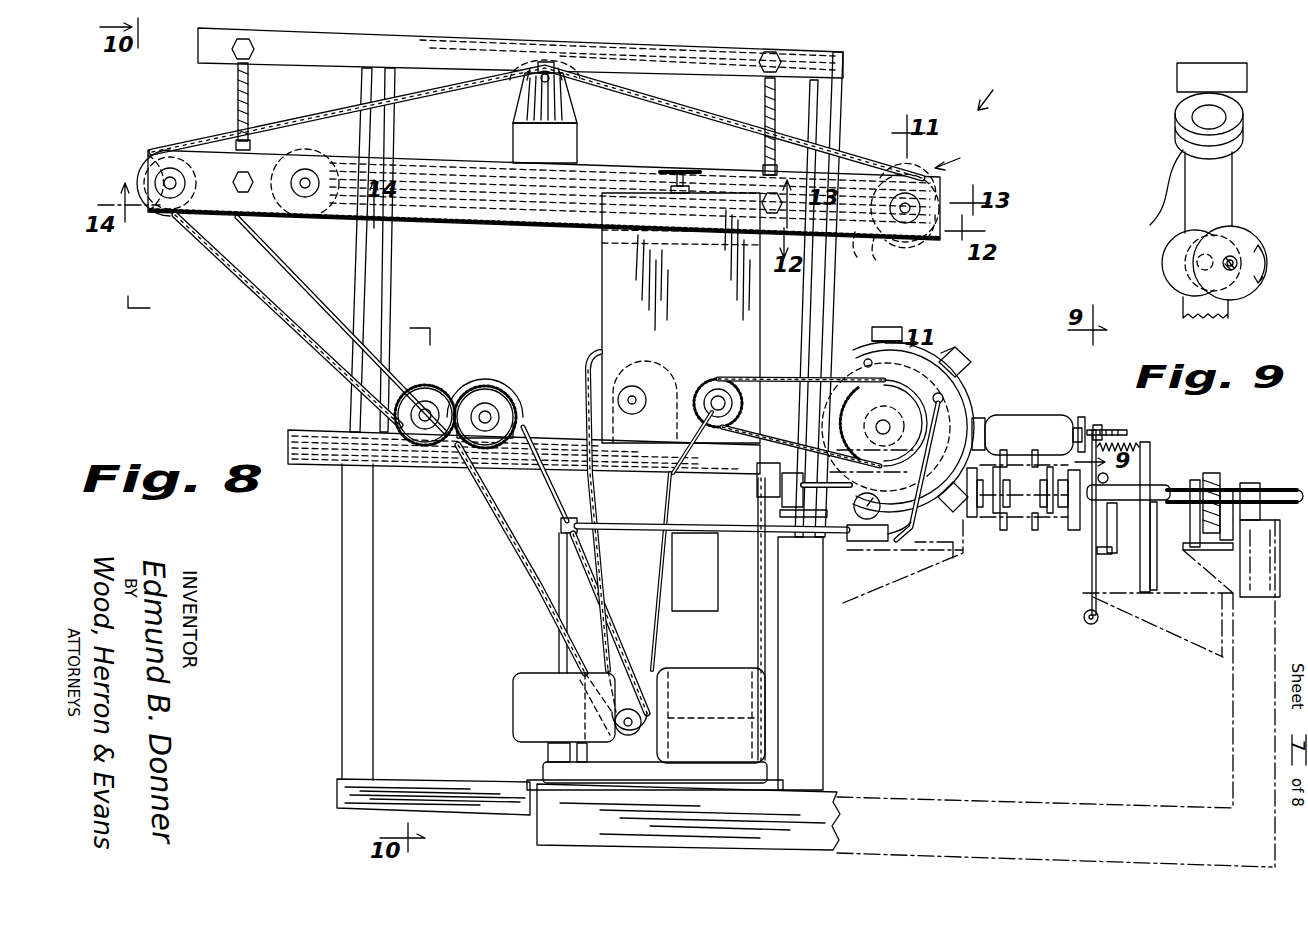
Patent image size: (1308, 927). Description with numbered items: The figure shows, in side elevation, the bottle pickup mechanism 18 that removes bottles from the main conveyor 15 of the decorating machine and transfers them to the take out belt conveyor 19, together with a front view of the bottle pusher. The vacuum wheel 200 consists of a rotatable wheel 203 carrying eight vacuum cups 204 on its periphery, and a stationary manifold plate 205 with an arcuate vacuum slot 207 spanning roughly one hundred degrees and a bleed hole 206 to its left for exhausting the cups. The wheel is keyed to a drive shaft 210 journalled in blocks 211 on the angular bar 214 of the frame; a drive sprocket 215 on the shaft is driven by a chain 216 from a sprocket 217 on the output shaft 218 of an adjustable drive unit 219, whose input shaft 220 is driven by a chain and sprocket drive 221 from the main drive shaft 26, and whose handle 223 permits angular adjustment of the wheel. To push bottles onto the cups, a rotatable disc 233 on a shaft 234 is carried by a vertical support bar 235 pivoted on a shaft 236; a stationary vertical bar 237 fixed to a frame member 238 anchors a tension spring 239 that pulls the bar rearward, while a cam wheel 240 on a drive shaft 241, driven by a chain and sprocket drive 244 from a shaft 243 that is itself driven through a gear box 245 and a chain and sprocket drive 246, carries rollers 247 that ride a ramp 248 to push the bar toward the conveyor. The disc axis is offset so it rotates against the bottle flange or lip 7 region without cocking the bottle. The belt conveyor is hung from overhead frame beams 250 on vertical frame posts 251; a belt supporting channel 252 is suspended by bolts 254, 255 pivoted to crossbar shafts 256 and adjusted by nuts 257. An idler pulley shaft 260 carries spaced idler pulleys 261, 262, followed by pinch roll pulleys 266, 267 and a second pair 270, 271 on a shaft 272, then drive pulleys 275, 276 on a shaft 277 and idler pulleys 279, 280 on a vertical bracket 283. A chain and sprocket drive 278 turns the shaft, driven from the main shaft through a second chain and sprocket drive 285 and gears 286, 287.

In FIG. 9, the flange or lip 7 is at (1173, 268).
In FIG. 8, the main conveyor 15 is at (1023, 537).
In FIG. 8, the bottle pickup mechanism 18 is at (995, 86).
In FIG. 8, the take out belt conveyor 19 is at (961, 157).
In FIG. 8, the main drive shaft 26 is at (628, 737).
In FIG. 8, the vacuum wheel 200 is at (979, 377).
In FIG. 9, the vacuum wheel 200 is at (1251, 180).
In FIG. 8, the vacuum cup supporting rotatable wheel 203 is at (853, 348).
In FIG. 9, the vacuum cup supporting rotatable wheel 203 is at (1224, 197).
In FIG. 8, the vacuum cups 204 is at (906, 326).
In FIG. 9, the vacuum cups 204 is at (1173, 236).
In FIG. 8, the stationary manifold plate 205 is at (905, 357).
In FIG. 8, the bleed hole 206 is at (853, 363).
In FIG. 8, the arcuate vacuum slot 207 is at (957, 363).
In FIG. 8, the drive shaft 210 is at (883, 420).
In FIG. 8, the blocks 211 is at (858, 426).
In FIG. 8, the angular bar 214 is at (524, 452).
In FIG. 8, the drive sprocket 215 is at (815, 380).
In FIG. 8, the chain 216 is at (740, 380).
In FIG. 8, the sprocket 217 is at (713, 397).
In FIG. 8, the output shaft 218 is at (722, 411).
In FIG. 8, the adjustable drive unit 219 is at (600, 291).
In FIG. 8, the input shaft 220 is at (636, 396).
In FIG. 8, the chain and sprocket drive 221 is at (670, 496).
In FIG. 8, the handle 223 is at (679, 170).
In FIG. 8, the rotatable disc 233 is at (1080, 417).
In FIG. 9, the rotatable disc 233 is at (1250, 295).
In FIG. 8, the shaft 234 is at (1125, 429).
In FIG. 9, the shaft 234 is at (1238, 258).
In FIG. 8, the vertical support bar 235 is at (1092, 566).
In FIG. 8, the shaft 236 is at (1090, 624).
In FIG. 8, the stationary vertical bar 237 is at (1140, 582).
In FIG. 8, the frame member 238 is at (1168, 641).
In FIG. 8, the tension spring 239 is at (1140, 447).
In FIG. 8, the rotatable cam wheel 240 is at (1098, 528).
In FIG. 8, the drive shaft 241 is at (1190, 482).
In FIG. 8, the shaft 243 is at (818, 485).
In FIG. 8, the chain and sprocket drive 244 is at (1212, 477).
In FIG. 8, the gear box 245 is at (677, 686).
In FIG. 8, the chain and sprocket drive 246 is at (766, 678).
In FIG. 8, the rollers 247 is at (1122, 563).
In FIG. 8, the ramp or cam 248 is at (1128, 514).
In FIG. 8, the overhead frame beams 250 is at (520, 53).
In FIG. 8, the vertical frame posts 251 is at (393, 133).
In FIG. 8, the belt supporting channel 252 is at (544, 195).
In FIG. 8, the bolt 254 is at (238, 95).
In FIG. 8, the bolt 255 is at (765, 96).
In FIG. 8, the crossbar shafts 256 is at (244, 173).
In FIG. 8, the nuts 257 is at (258, 49).
In FIG. 8, the idler pulley shaft 260 is at (910, 207).
In FIG. 8, the idler pulley 261 is at (910, 175).
In FIG. 8, the idler pulley 262 is at (910, 231).
In FIG. 8, the pinch roll pulley 266 is at (911, 256).
In FIG. 8, the pinch roll pulley 267 is at (855, 245).
In FIG. 8, the pinch roll pulley 270 is at (288, 228).
In FIG. 8, the pinch roll pulley 271 is at (341, 324).
In FIG. 8, the shaft 272 is at (305, 178).
In FIG. 8, the drive pulley 275 is at (140, 168).
In FIG. 8, the drive pulley 276 is at (170, 183).
In FIG. 8, the shaft 277 is at (170, 200).
In FIG. 8, the chain and sprocket drive 278 is at (271, 316).
In FIG. 8, the idler pulley 279 is at (569, 84).
In FIG. 8, the idler pulley 280 is at (581, 103).
In FIG. 8, the vertical bracket 283 is at (515, 108).
In FIG. 8, the second chain and sprocket drive 285 is at (538, 578).
In FIG. 8, the gear 286 is at (437, 390).
In FIG. 8, the gear 287 is at (507, 387).